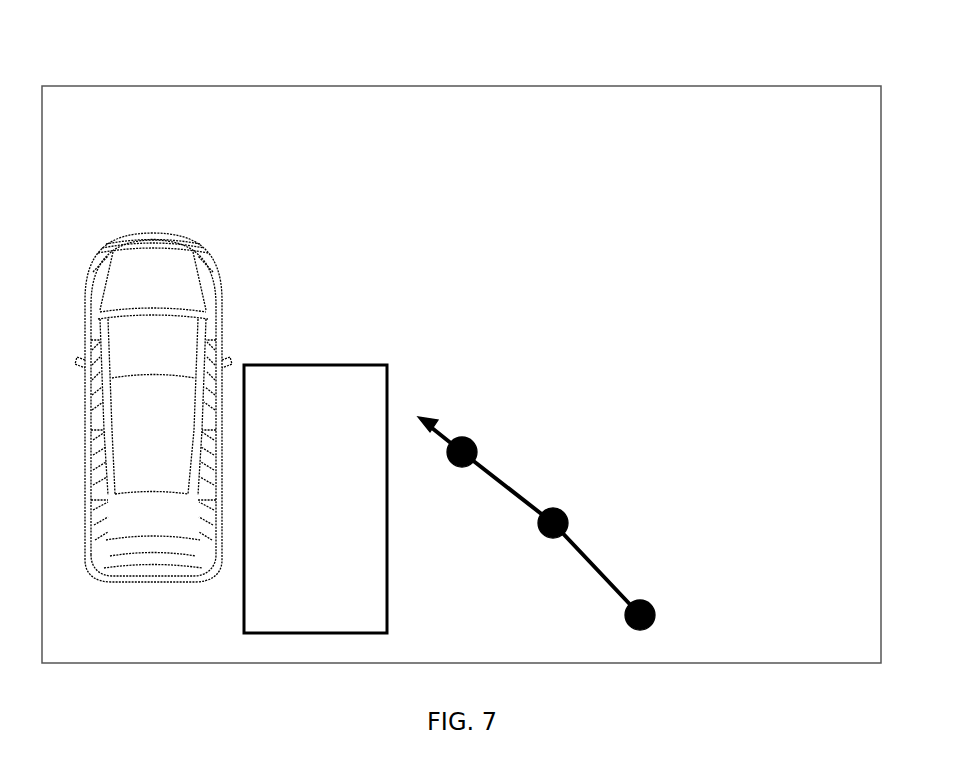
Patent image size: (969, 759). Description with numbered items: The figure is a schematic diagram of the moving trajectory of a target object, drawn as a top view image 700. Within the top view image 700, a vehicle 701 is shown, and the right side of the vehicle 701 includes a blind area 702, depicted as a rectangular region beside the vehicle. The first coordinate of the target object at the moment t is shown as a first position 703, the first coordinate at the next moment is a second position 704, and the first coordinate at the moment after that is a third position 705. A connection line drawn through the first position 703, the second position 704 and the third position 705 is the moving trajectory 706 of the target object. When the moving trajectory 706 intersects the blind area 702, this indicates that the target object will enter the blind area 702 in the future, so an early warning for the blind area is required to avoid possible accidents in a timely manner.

The top view image 700 is at (398, 87).
The vehicle 701 is at (122, 233).
The blind area 702 is at (320, 356).
The first position 703 is at (655, 607).
The second position 704 is at (565, 512).
The third position 705 is at (473, 441).
The moving trajectory 706 is at (448, 462).